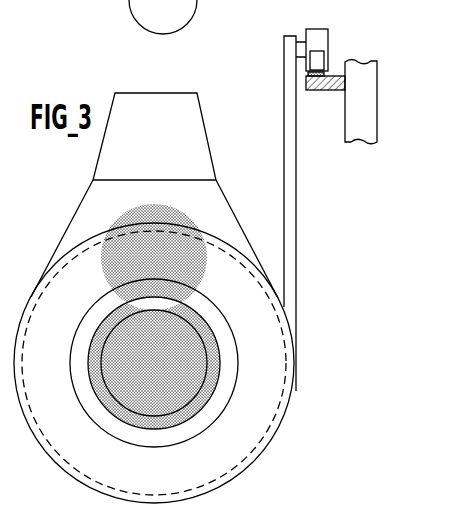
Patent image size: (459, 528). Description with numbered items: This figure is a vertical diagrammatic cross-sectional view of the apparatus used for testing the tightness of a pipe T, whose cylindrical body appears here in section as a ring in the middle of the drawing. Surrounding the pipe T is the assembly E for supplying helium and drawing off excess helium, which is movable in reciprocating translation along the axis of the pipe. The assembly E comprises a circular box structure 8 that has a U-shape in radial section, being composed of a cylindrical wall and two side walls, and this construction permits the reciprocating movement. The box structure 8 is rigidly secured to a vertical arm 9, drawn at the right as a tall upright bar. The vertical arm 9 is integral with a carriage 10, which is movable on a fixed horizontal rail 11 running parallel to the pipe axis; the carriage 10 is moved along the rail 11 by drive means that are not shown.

The box structure 8 is at (296, 388).
The vertical arm 9 is at (293, 212).
The carriage 10 is at (316, 37).
The fixed horizontal rail 11 is at (327, 89).
The assembly for supplying helium and drawing off excess helium E is at (62, 238).
The pipe T is at (111, 322).